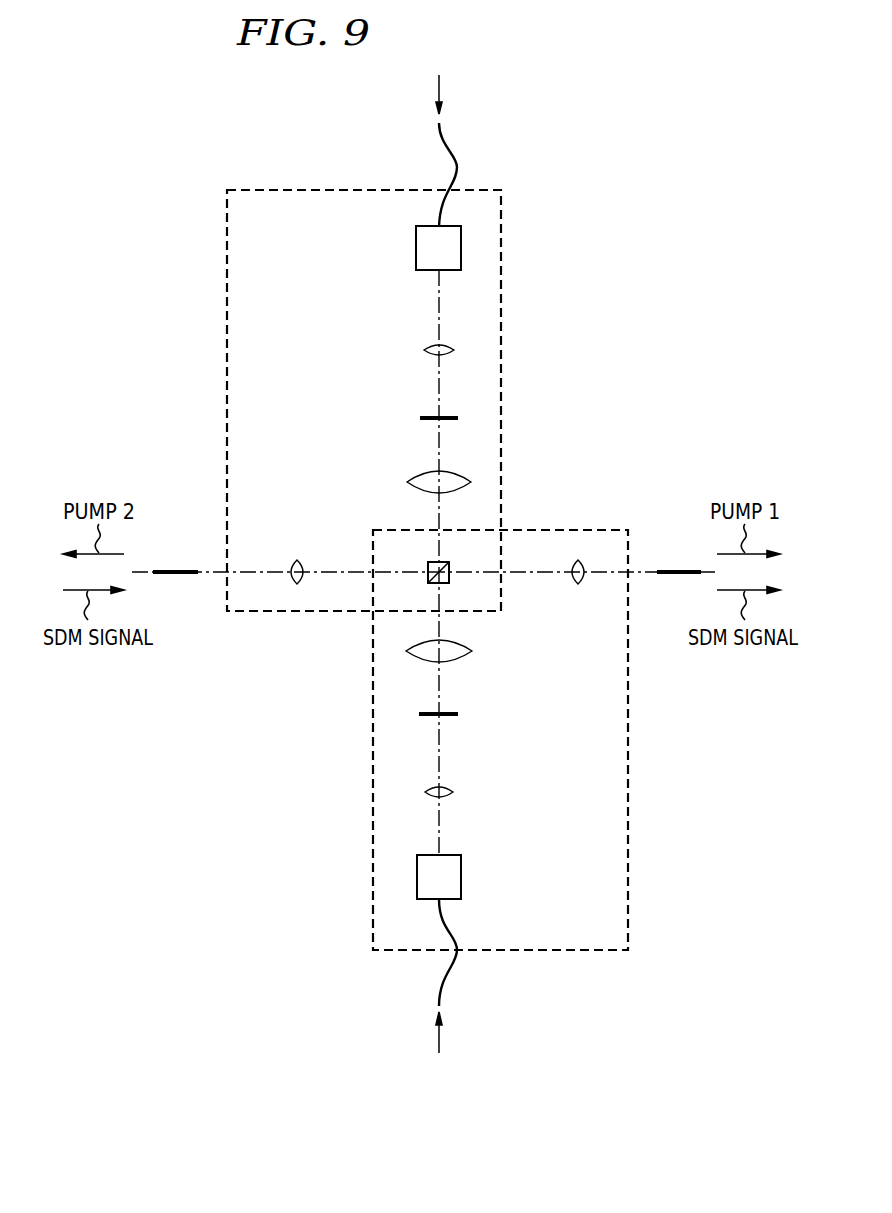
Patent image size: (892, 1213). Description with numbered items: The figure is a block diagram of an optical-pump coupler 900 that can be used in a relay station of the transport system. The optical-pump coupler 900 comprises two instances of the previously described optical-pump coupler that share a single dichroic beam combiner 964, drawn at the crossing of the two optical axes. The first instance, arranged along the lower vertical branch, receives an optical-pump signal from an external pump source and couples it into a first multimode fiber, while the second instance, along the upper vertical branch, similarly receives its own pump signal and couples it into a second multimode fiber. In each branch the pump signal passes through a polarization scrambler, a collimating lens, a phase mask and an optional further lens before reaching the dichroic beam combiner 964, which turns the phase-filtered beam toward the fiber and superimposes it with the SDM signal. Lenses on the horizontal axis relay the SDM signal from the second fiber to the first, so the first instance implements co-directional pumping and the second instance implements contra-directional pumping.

The optical-pump coupler 900 is at (322, 90).
The dichroic beam combiner 964 is at (447, 563).